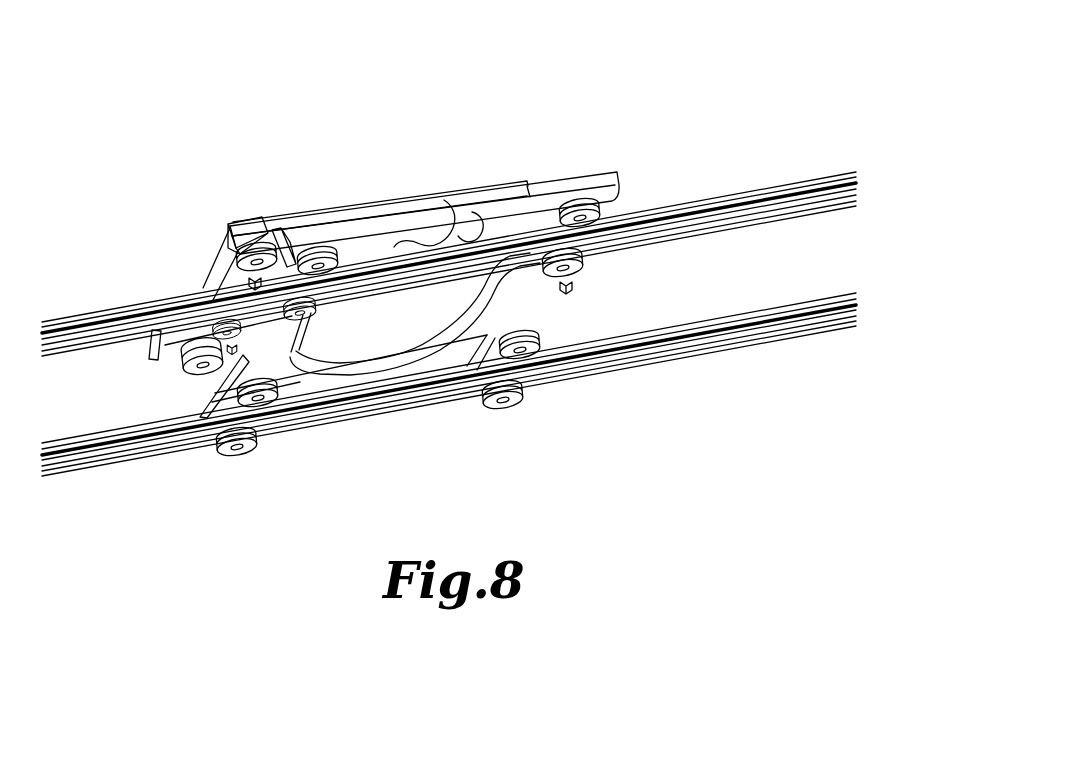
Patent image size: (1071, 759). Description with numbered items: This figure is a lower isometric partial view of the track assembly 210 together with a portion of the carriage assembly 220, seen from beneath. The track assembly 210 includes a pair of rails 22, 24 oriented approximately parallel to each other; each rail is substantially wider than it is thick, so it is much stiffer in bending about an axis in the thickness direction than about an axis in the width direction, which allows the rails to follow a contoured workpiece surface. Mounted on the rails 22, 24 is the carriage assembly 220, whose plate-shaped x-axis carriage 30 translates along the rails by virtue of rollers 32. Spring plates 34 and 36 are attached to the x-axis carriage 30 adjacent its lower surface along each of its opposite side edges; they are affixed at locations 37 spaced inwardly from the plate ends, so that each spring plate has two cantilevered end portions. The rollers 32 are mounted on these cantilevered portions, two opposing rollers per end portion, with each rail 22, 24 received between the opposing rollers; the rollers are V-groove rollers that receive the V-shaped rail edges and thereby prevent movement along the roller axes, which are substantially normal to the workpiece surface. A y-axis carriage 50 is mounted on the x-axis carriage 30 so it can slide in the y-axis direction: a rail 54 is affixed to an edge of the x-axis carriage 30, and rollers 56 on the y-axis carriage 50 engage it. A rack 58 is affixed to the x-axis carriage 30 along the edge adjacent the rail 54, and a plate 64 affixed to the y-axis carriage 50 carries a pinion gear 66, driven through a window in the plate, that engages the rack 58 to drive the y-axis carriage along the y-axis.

The rail 22 is at (755, 337).
The rail 24 is at (806, 184).
The x-axis carriage 30 is at (525, 194).
The rollers 32 is at (318, 250).
The spring plate 34 is at (422, 347).
The spring plate 36 is at (507, 228).
The locations 37 is at (395, 247).
The y-axis carriage 50 is at (255, 218).
The rail 54 is at (280, 233).
The rollers 56 is at (235, 262).
The rack 58 is at (207, 388).
The plate 64 is at (160, 345).
The pinion gear 66 is at (182, 372).
The track assembly 210 is at (860, 128).
The carriage assembly 220 is at (493, 68).